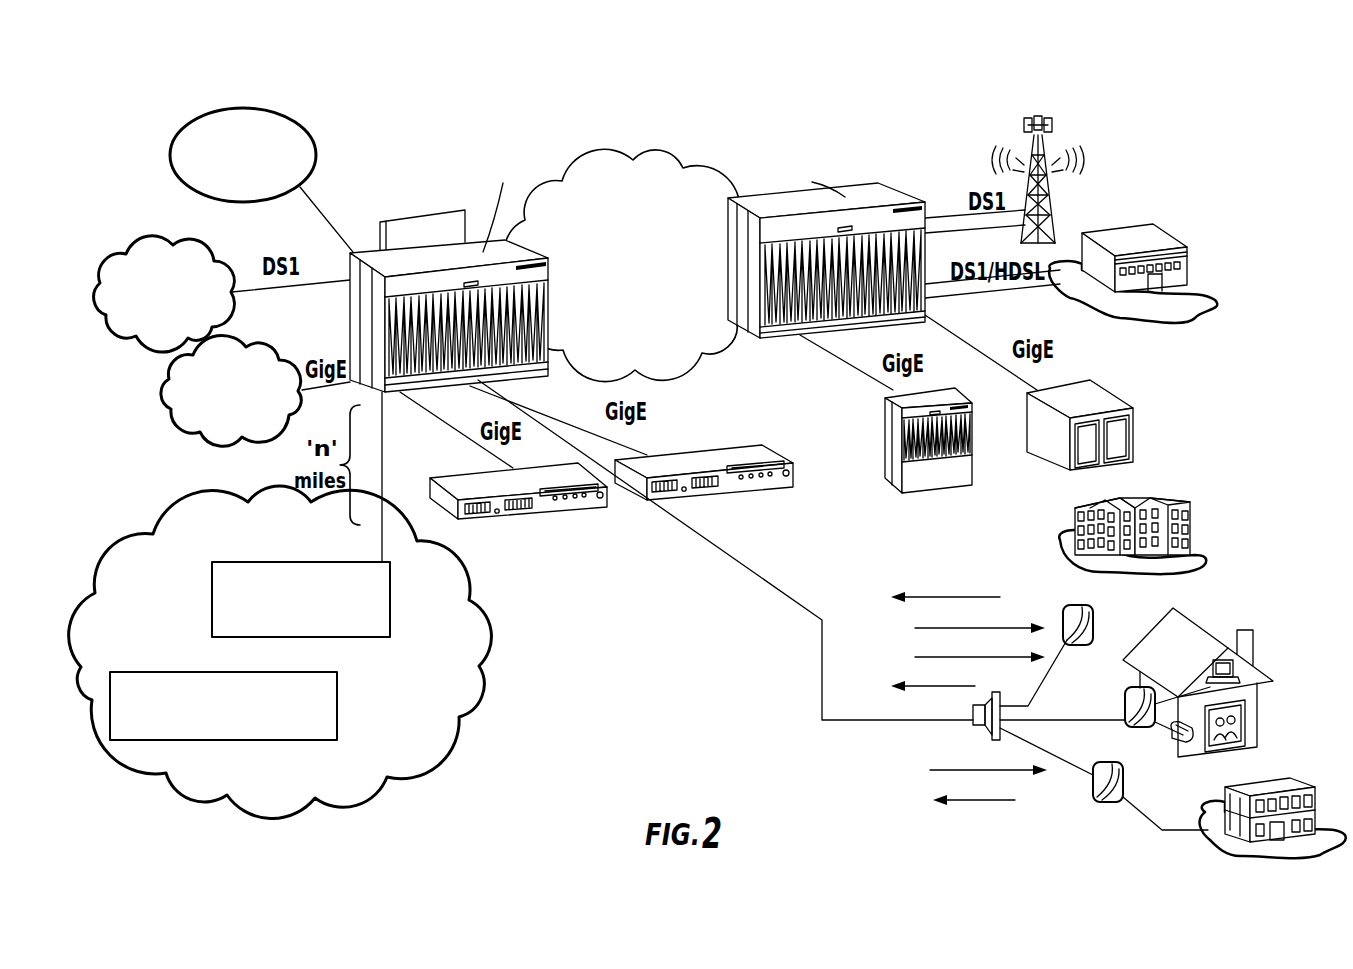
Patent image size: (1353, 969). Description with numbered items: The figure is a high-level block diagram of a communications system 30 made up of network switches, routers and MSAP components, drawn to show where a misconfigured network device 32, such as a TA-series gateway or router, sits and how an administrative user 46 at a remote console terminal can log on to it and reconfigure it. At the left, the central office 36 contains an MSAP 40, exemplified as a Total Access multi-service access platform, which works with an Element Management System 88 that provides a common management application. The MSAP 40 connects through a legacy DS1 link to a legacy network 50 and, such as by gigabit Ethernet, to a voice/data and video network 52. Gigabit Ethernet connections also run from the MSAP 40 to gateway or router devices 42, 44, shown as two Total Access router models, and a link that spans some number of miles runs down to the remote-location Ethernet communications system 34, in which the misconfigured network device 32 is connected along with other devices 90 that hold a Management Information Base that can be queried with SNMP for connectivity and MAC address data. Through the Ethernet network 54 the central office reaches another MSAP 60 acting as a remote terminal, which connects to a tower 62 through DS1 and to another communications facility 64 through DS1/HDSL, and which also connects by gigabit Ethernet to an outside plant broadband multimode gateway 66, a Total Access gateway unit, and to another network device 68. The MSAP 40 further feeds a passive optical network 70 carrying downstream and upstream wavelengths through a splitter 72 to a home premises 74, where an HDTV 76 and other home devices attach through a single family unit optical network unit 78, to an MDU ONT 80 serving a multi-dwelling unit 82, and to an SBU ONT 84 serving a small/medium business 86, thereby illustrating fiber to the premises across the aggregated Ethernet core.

The communications system 30 is at (672, 96).
The misconfigured network device 32 is at (212, 588).
The Ethernet communications system 34 is at (275, 797).
The central office 36 is at (479, 199).
The MSAP 40 is at (340, 313).
The gateway or router device 42 is at (465, 470).
The gateway or router device 44 is at (733, 492).
The administrative user 46 is at (172, 167).
The legacy network 50 is at (112, 258).
The voice/data and video network 52 is at (168, 389).
The Ethernet network 54 is at (655, 163).
The MSAP 60 is at (890, 194).
The tower 62 is at (1050, 189).
The communications facility 64 is at (1157, 237).
The outside plant broadband multimode gateway 66 is at (885, 421).
The other network device 68 is at (1093, 391).
The passive optical network 70 is at (866, 762).
The splitter 72 is at (972, 722).
The home premises 74 is at (1210, 633).
The HDTV 76 is at (1243, 708).
The single family unit optical network unit 78 is at (1124, 702).
The MDU ONT 80 is at (1096, 627).
The multi-dwelling unit 82 is at (1168, 508).
The SBU ONT 84 is at (1092, 785).
The small/medium business 86 is at (1222, 840).
The Element Management System 88 is at (380, 240).
The other devices 90 is at (338, 712).